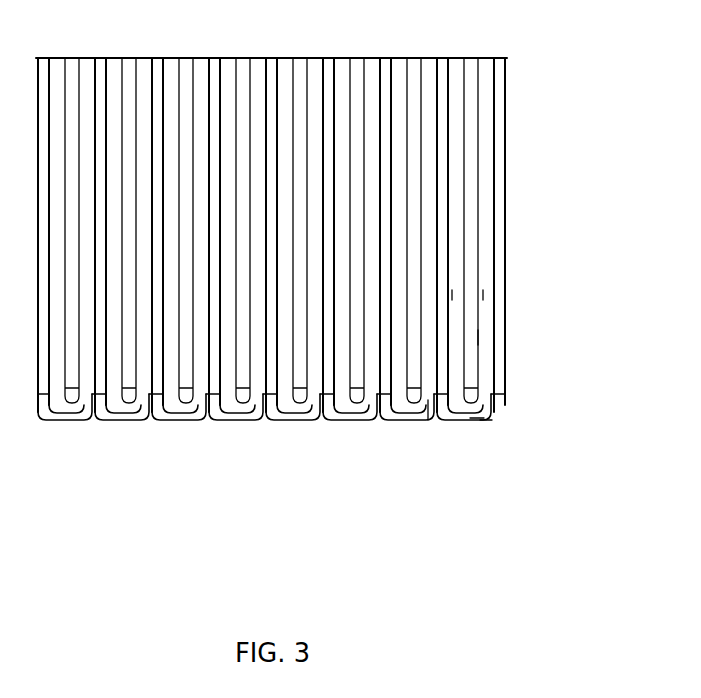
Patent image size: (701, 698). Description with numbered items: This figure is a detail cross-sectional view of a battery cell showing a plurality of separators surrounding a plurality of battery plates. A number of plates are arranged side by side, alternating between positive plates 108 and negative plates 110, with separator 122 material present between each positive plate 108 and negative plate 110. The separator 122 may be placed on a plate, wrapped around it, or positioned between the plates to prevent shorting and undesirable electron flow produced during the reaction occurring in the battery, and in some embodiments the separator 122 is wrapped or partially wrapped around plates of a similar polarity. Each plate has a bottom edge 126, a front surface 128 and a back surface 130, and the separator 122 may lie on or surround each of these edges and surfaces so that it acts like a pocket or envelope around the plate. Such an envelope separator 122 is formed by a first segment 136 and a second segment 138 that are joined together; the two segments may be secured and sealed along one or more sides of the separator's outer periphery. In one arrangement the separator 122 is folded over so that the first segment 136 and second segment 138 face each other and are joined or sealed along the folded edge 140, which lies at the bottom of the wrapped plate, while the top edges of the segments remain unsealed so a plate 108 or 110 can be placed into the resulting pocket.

The positive plate 108 is at (465, 187).
The negative plate 110 is at (503, 238).
The separator 122 is at (425, 113).
The bottom edge 126 is at (480, 410).
The front surface 128 is at (478, 337).
The back surface 130 is at (453, 348).
The first segment 136 is at (483, 297).
The second segment 138 is at (456, 293).
The folded edge 140 is at (483, 416).